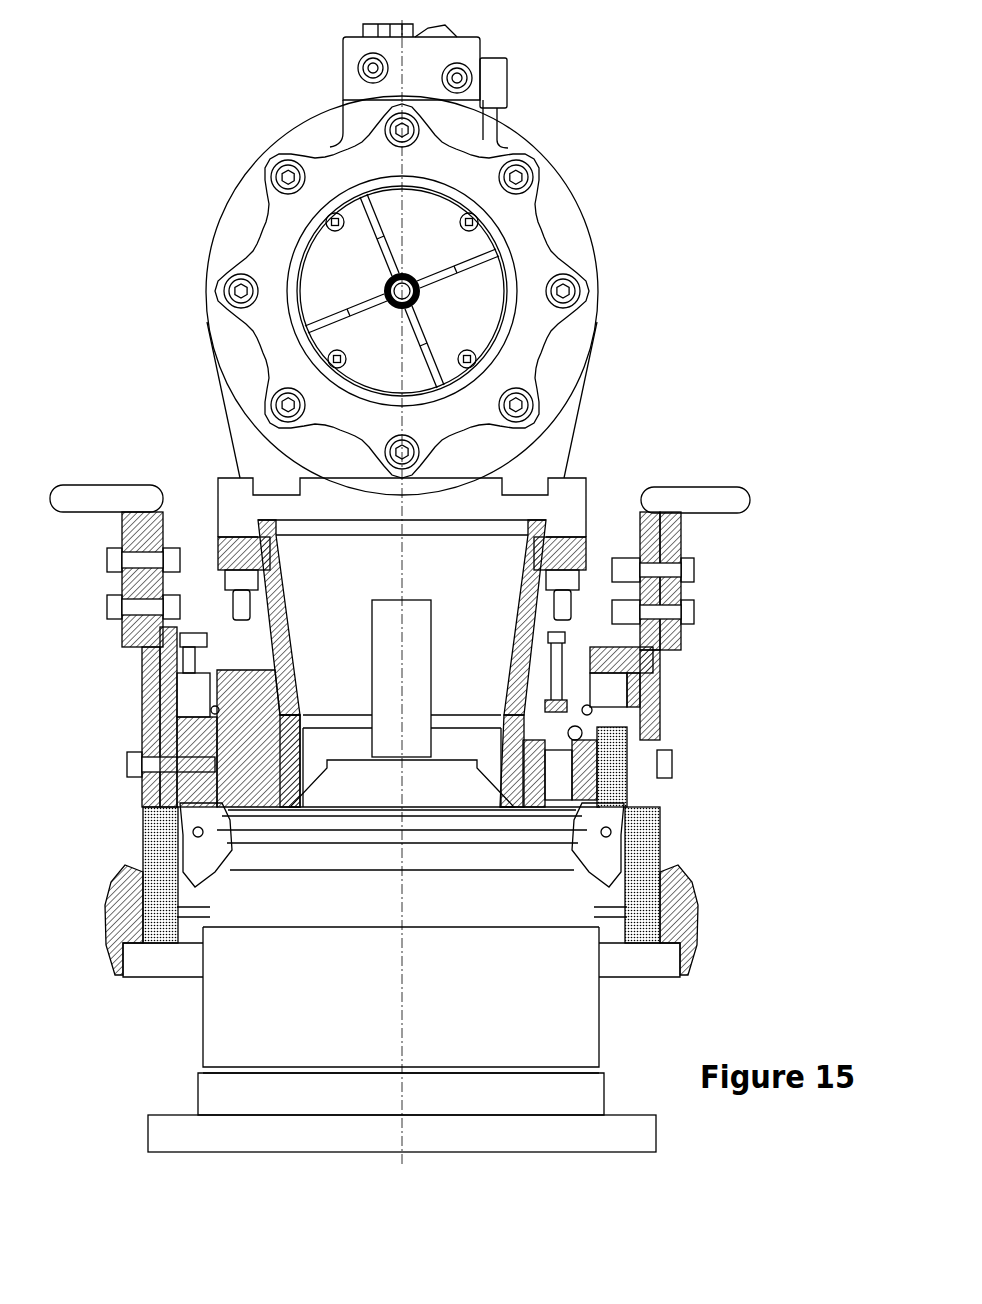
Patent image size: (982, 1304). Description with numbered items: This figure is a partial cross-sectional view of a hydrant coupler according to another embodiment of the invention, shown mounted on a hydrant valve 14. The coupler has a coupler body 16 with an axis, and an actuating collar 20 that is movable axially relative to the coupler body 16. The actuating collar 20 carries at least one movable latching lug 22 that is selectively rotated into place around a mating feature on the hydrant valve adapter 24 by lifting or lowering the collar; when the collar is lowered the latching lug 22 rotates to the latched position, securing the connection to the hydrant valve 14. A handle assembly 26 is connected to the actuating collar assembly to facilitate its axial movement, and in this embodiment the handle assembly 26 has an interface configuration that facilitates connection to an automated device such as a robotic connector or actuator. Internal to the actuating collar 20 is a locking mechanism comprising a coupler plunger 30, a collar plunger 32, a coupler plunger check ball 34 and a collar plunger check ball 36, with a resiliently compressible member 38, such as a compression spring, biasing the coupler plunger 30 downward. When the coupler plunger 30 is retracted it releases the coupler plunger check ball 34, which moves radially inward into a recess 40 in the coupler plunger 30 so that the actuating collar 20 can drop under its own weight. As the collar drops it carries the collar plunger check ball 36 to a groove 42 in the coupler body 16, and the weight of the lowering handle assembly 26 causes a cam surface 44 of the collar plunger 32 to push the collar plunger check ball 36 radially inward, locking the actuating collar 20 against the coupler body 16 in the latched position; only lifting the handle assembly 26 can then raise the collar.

The hydrant valve 14 is at (203, 1017).
The coupler body 16 is at (543, 612).
The actuating collar 20 is at (660, 863).
The latching lug 22 is at (597, 850).
The hydrant valve adapter 24 is at (222, 1098).
The handle assembly 26 is at (88, 498).
The coupler plunger 30 is at (557, 782).
The collar plunger 32 is at (620, 690).
The coupler plunger check ball 34 is at (660, 720).
The collar plunger check ball 36 is at (592, 710).
The resiliently compressible member 38 is at (590, 663).
The recess 40 is at (510, 712).
The groove 42 is at (217, 708).
The cam surface 44 is at (142, 728).